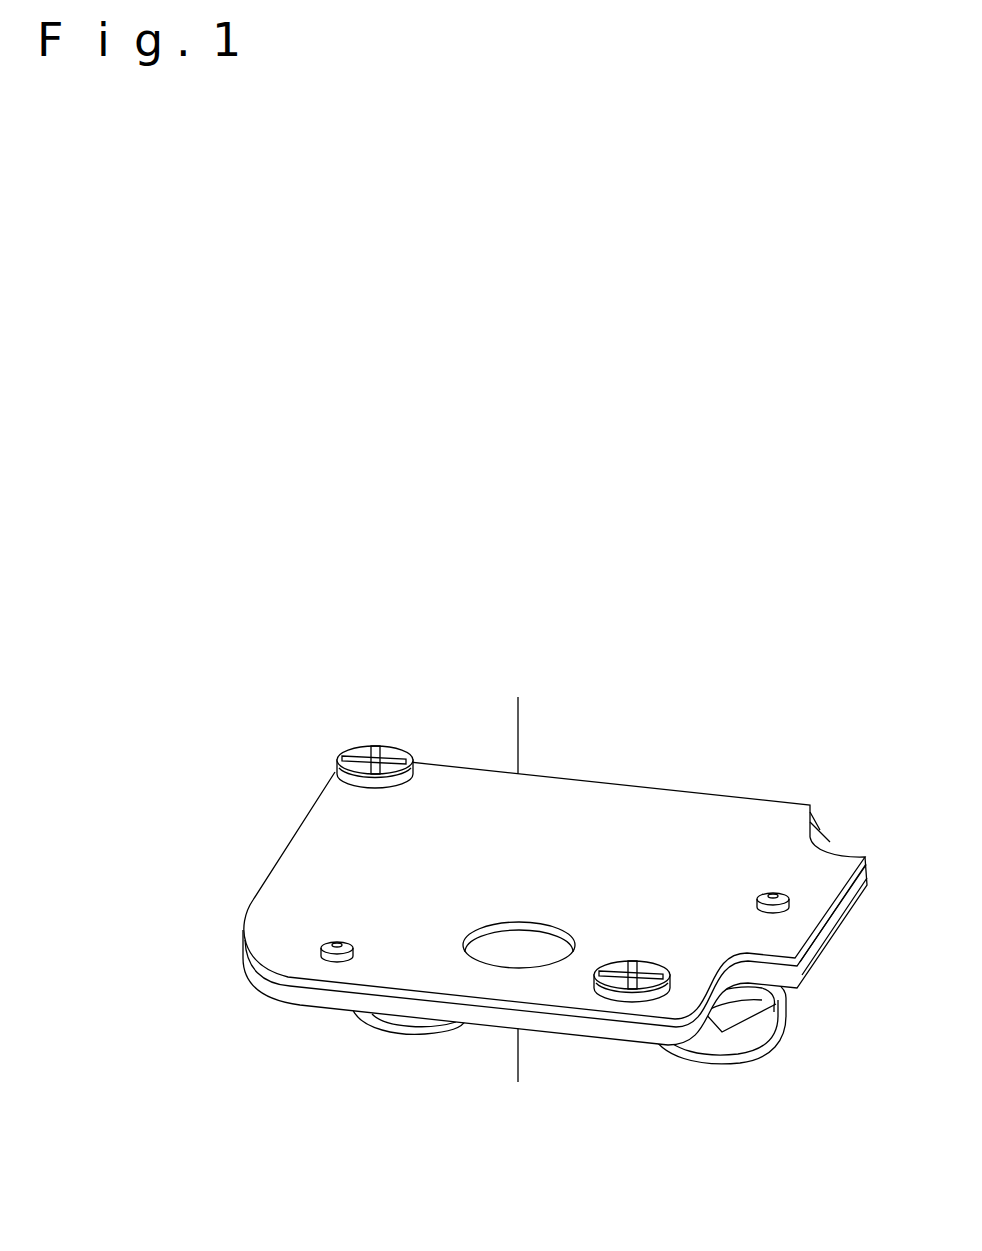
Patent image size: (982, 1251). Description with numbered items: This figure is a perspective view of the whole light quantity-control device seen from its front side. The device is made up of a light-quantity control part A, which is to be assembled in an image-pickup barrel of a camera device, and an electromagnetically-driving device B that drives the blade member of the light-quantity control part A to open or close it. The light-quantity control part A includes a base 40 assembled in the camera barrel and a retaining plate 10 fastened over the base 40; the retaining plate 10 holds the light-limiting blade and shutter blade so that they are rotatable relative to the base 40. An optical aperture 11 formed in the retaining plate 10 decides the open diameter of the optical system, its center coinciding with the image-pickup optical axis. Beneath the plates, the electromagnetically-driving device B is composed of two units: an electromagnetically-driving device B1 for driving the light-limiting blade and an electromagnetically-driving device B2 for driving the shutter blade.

The retaining plate 10 is at (578, 805).
The optical aperture 11 is at (534, 928).
The base 40 is at (290, 993).
The light-quantity control part A is at (700, 817).
The electromagnetically-driving device B is at (623, 1114).
The electromagnetically-driving device for driving the light-limiting blade B1 is at (422, 1030).
The electromagnetically-driving device for driving the shutter blade B2 is at (672, 1050).